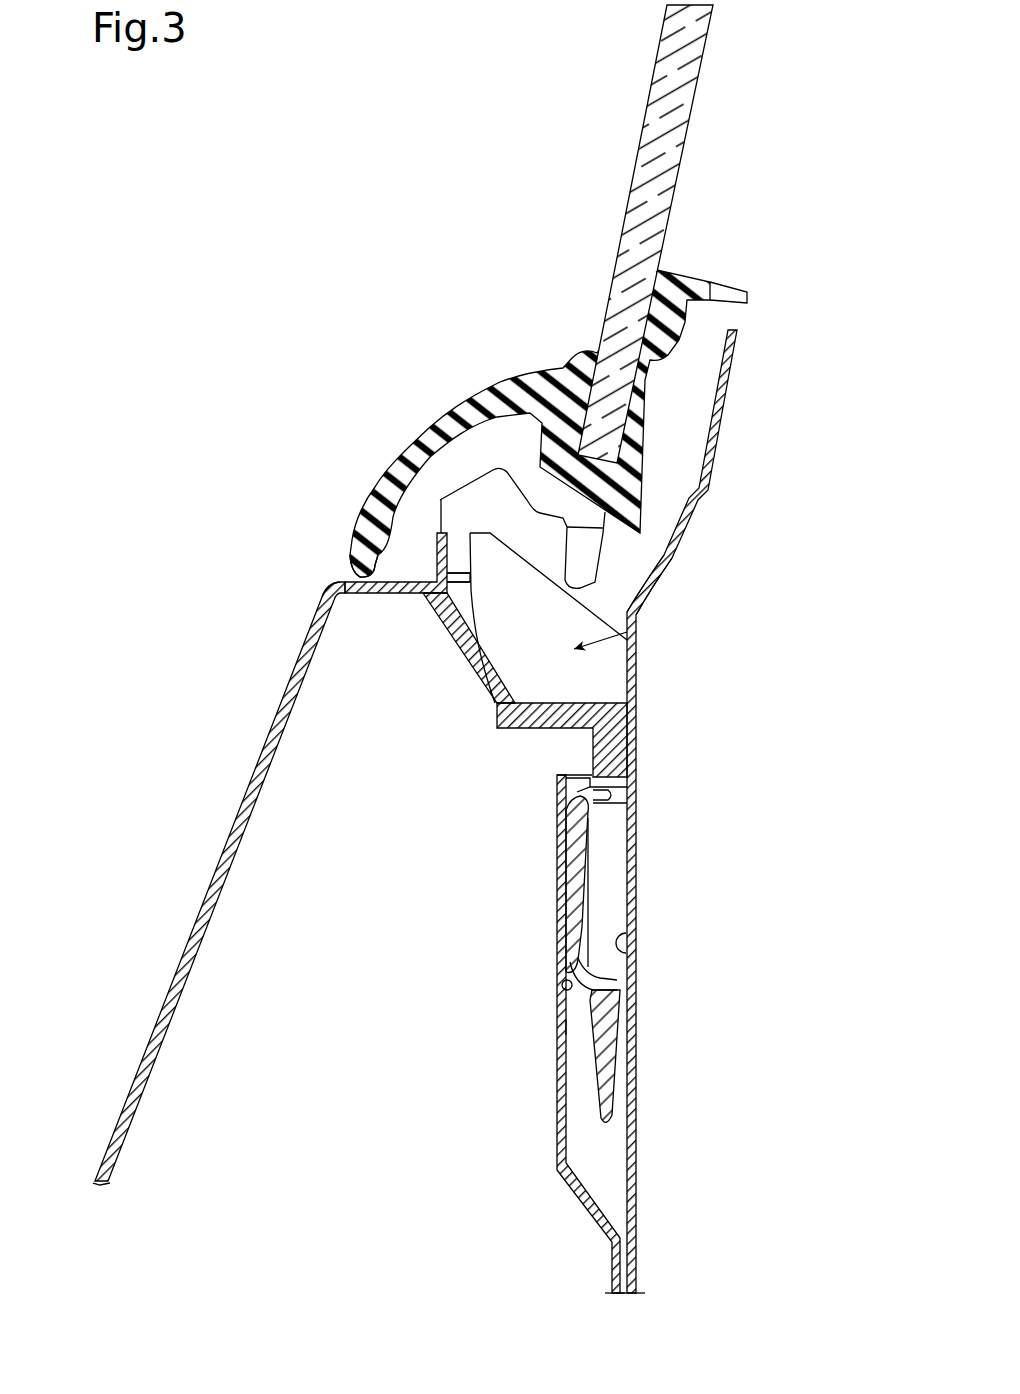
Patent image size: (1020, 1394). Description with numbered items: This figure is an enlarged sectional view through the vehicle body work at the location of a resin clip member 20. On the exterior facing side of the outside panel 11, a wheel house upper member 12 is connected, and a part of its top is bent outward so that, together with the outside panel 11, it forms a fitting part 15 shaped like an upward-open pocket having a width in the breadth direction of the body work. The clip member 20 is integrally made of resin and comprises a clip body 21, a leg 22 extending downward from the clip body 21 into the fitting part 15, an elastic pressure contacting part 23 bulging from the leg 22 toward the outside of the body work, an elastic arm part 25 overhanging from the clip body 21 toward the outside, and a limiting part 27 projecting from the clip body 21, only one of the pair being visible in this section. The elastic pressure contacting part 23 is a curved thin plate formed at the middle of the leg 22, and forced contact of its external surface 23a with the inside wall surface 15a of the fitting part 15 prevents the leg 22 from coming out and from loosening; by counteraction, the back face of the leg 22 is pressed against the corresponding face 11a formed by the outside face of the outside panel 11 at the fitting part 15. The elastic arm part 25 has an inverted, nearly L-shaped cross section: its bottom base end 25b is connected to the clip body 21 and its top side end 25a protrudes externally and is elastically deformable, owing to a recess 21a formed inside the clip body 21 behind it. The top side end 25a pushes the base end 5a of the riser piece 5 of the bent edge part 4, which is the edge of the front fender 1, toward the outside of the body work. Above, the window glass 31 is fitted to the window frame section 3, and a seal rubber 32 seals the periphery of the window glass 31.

The front fender 1 is at (205, 880).
The window frame section 3 is at (336, 574).
The bent edge part 4 is at (382, 590).
The riser piece 5 is at (548, 422).
The base end of the riser piece 5a is at (457, 590).
The outside panel 11 is at (630, 1143).
The corresponding face of the fitting part 11a is at (634, 950).
The wheel house upper member 12 is at (563, 1027).
The fitting part 15 is at (587, 1159).
The inside wall surface of the fitting part 15a is at (563, 1000).
The clip member 20 is at (503, 737).
The clip body 21 is at (600, 718).
The recess 21a is at (637, 613).
The leg 22 is at (613, 1043).
The elastic pressure contacting part 23 is at (590, 883).
The external surface of the elastic pressure contacting part 23a is at (582, 873).
The elastic arm part 25 is at (460, 650).
The top side end of the elastic arm part 25a is at (428, 597).
The bottom base end of the elastic arm part 25b is at (493, 703).
The limiting part 27 is at (365, 538).
The window glass 31 is at (650, 167).
The seal rubber 32 is at (496, 405).